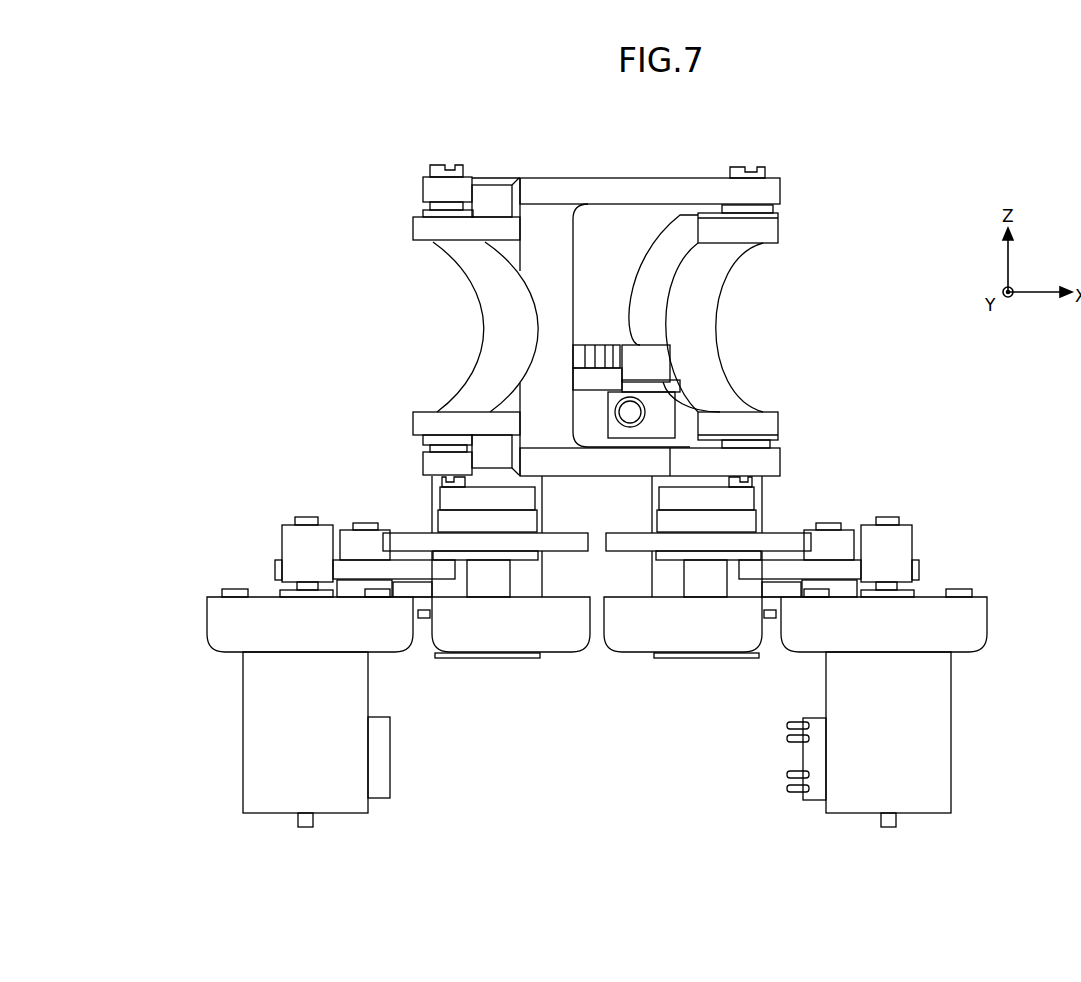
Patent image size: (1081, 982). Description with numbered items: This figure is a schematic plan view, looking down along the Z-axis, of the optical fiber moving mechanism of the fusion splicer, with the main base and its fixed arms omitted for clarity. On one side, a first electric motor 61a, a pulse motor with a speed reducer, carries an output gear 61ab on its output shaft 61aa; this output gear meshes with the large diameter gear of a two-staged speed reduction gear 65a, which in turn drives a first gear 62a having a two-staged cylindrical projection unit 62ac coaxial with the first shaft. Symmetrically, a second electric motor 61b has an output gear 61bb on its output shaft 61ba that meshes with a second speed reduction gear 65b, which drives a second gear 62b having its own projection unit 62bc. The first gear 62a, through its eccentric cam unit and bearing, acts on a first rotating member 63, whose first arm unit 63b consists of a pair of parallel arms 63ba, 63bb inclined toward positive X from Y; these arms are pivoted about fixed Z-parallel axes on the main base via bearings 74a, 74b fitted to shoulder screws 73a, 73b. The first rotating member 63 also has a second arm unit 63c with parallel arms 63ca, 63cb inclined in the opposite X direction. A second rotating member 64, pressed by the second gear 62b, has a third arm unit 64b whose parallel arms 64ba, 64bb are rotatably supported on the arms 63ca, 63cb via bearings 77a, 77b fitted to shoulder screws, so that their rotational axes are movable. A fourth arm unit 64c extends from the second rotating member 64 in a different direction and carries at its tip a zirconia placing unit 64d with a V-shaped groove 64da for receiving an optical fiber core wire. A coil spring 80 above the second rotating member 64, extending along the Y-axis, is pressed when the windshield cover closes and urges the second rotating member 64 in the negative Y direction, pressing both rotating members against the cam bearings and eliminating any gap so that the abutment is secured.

The first rotating member 63 is at (603, 293).
The first arm unit 63b is at (400, 299).
The arm 63ba is at (413, 232).
The arm 63bb is at (412, 430).
The second arm unit 63c is at (732, 300).
The arm 63ca is at (781, 193).
The arm 63cb is at (781, 458).
The second rotating member 64 is at (733, 356).
The third arm unit 64b is at (796, 326).
The arm 64ba is at (781, 236).
The arm 64bb is at (781, 420).
The fourth arm unit 64c is at (597, 390).
The placing unit 64d is at (607, 316).
The V-shaped groove 64da is at (590, 360).
The shoulder screw 73a is at (437, 165).
The shoulder screw 73b is at (466, 481).
The bearing 74a is at (423, 190).
The bearing 74b is at (470, 462).
The bearing 77a is at (738, 167).
The bearing 77b is at (712, 489).
The coil spring 80 is at (646, 412).
The first gear 62a is at (478, 462).
The projection unit 62ac is at (512, 536).
The second gear 62b is at (724, 530).
The projection unit 62bc is at (682, 536).
The first electric motor 61a is at (380, 641).
The output shaft 61aa is at (304, 516).
The output gear 61ab is at (282, 543).
The second electric motor 61b is at (815, 646).
The output shaft 61ba is at (919, 491).
The output gear 61bb is at (914, 547).
The speed reduction gear 65a is at (357, 512).
The speed reduction gear 65b is at (846, 513).